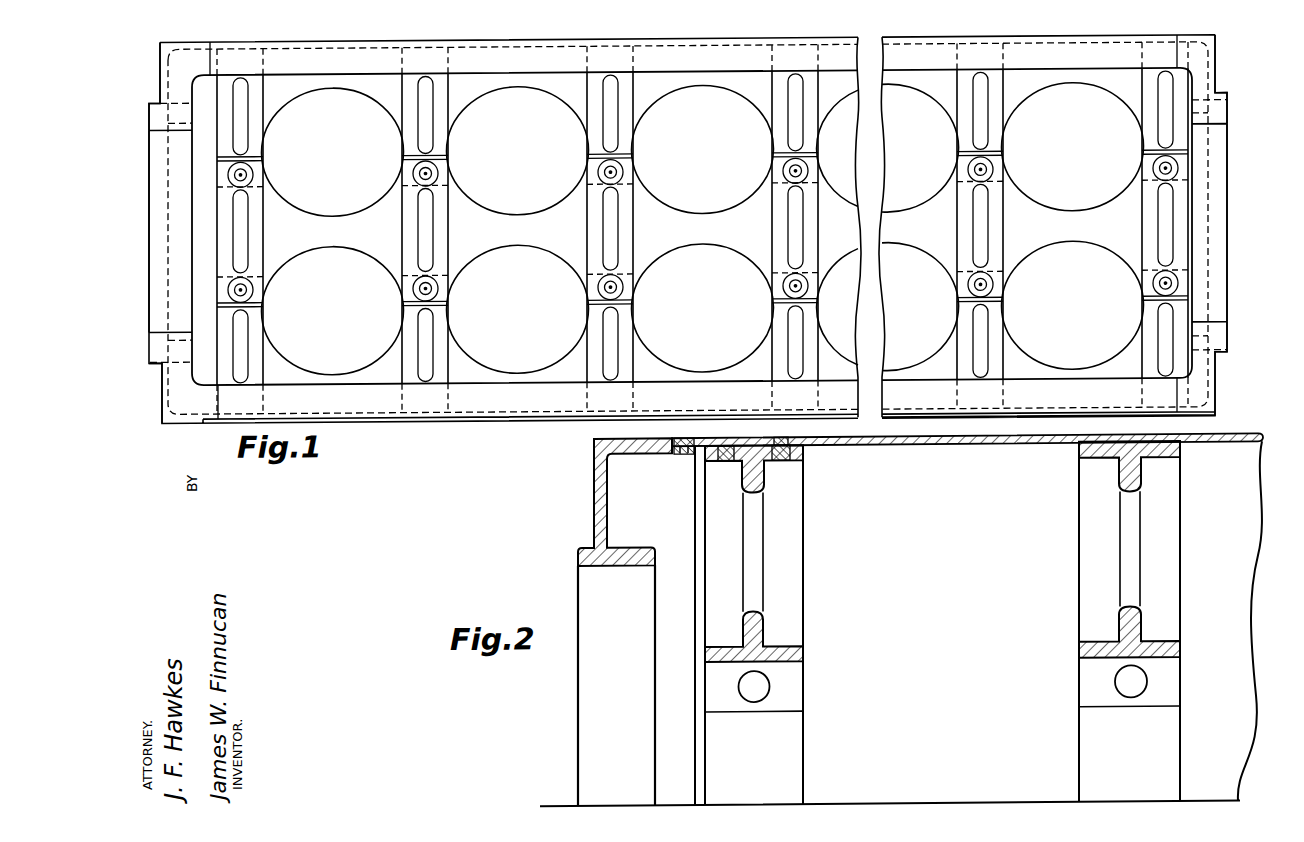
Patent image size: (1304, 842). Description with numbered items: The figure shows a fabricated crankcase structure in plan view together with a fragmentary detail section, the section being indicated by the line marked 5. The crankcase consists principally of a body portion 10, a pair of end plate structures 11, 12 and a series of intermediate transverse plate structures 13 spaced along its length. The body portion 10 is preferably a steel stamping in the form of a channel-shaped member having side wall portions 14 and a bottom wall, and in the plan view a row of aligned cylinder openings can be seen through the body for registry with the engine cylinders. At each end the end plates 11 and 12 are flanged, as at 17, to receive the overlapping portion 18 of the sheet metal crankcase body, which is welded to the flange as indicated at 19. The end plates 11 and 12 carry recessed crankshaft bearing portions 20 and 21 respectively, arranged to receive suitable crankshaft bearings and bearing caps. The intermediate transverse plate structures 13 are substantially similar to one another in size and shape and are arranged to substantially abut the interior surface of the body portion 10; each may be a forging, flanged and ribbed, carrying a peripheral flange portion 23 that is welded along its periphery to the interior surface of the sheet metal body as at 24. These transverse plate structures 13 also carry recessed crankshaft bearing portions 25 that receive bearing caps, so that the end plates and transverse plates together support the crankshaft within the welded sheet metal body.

In FIG. 1, the section line 5- 5 is at (408, 35).
In FIG. 1, the body portion 10 is at (490, 428).
In FIG. 2, the body portion 10 is at (1253, 432).
In FIG. 1, the end plate structure 11 is at (163, 84).
In FIG. 2, the end plate structure 11 is at (594, 492).
In FIG. 1, the end plate structure 12 is at (1217, 72).
In FIG. 1, the intermediate transverse plate structure 13 is at (445, 243).
In FIG. 2, the intermediate transverse plate structure 13 is at (797, 585).
In FIG. 1, the side wall portion 14 is at (456, 423).
In FIG. 2, the side wall portion 14 is at (942, 447).
In FIG. 2, the flange 17 is at (688, 450).
In FIG. 2, the overlapping portion 18 is at (684, 446).
In FIG. 2, the weld 19 is at (700, 452).
In FIG. 1, the recessed crankshaft bearing portion 20 is at (170, 231).
In FIG. 2, the recessed crankshaft bearing portion 20 is at (583, 578).
In FIG. 1, the recessed crankshaft bearing portion 21 is at (1219, 213).
In FIG. 2, the peripheral flange portion 23 is at (777, 456).
In FIG. 2, the weld 24 is at (782, 466).
In FIG. 1, the recessed crankshaft bearing portion 25 is at (599, 294).
In FIG. 2, the recessed crankshaft bearing portion 25 is at (798, 684).